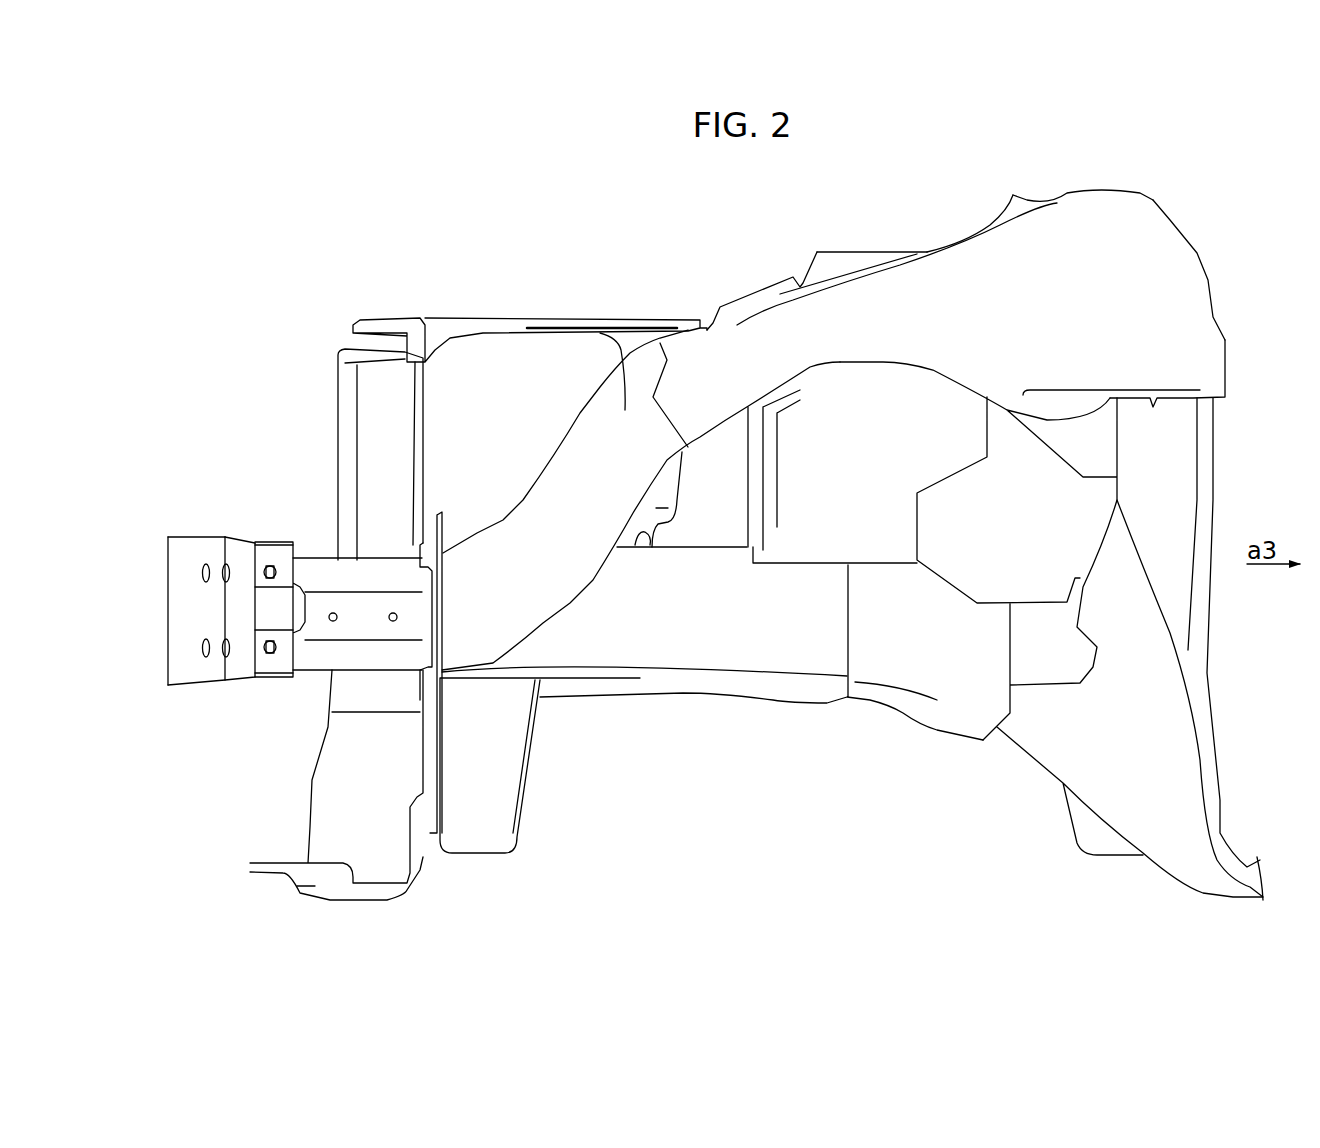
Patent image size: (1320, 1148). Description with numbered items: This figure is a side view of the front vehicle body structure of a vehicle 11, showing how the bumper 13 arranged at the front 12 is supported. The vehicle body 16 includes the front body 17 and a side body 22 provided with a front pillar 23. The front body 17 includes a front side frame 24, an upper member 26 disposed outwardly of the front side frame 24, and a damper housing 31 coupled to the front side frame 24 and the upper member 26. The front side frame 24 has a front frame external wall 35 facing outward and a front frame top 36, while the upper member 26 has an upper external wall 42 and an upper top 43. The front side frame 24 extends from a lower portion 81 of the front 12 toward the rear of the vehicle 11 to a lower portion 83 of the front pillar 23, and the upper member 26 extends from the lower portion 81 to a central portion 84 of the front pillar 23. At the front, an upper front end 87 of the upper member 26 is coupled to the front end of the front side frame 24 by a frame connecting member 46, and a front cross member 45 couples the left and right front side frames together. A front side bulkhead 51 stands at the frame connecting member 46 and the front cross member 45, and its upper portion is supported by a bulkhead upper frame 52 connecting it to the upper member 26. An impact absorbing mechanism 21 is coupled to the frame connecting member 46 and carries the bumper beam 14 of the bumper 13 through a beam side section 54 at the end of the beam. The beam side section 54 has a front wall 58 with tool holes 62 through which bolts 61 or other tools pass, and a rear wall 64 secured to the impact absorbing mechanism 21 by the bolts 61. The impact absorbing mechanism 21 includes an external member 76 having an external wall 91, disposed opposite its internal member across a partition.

The vehicle 11 is at (892, 218).
The front 12 is at (123, 540).
The bumper 13 is at (190, 520).
The bumper beam 14 is at (238, 535).
The vehicle body 16 is at (1212, 230).
The front body 17 is at (650, 300).
The impact absorbing mechanism 21 is at (320, 500).
The side body 22 is at (1283, 300).
The front pillar 23 is at (1142, 202).
The front side frame 24 is at (747, 713).
The upper member 26 is at (593, 388).
The damper housing 31 is at (825, 255).
The front frame external wall 35 is at (665, 628).
The front frame top 36 is at (640, 535).
The upper external wall 42 is at (622, 405).
The upper top 43 is at (580, 413).
The front cross member 45 is at (330, 768).
The frame connecting member 46 is at (443, 578).
The front side bulkhead 51 is at (400, 440).
The bulkhead upper frame 52 is at (470, 318).
The beam side section 54 is at (195, 672).
The front wall 58 is at (180, 610).
The bolt 61 is at (280, 650).
The tool hole 62 is at (200, 648).
The rear wall 64 is at (283, 565).
The external member 76 is at (325, 575).
The lower portion 81 is at (185, 768).
The lower portion 83 is at (1200, 688).
The central portion 84 is at (1203, 342).
The upper front end 87 is at (460, 572).
The external wall 91 is at (360, 622).